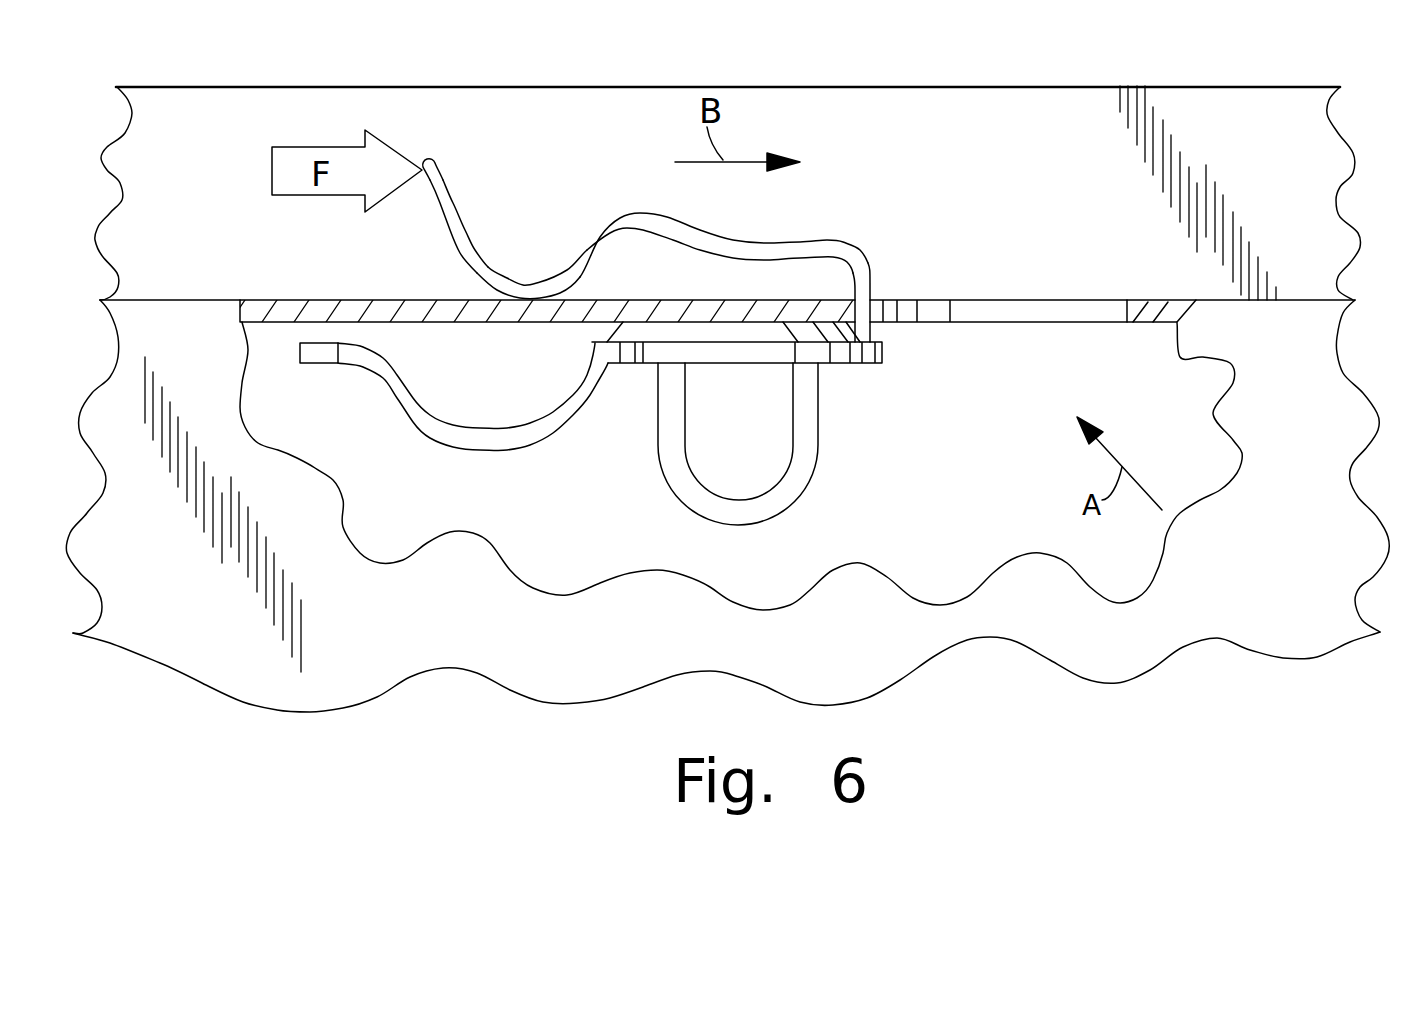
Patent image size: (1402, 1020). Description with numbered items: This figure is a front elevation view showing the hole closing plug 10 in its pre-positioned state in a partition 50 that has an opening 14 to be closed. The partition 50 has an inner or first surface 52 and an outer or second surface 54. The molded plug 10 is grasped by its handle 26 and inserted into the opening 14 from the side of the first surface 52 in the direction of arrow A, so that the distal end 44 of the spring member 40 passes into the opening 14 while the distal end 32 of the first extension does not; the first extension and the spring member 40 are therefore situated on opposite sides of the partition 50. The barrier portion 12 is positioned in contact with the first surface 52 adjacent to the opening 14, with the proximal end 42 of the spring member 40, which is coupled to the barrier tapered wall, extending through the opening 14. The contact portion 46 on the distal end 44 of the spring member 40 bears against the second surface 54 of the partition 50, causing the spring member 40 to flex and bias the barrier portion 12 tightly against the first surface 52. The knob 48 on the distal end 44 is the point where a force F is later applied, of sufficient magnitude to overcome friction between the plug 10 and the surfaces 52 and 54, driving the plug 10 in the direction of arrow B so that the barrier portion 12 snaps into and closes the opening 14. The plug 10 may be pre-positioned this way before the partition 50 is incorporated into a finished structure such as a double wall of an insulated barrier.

The hole closing plug 10 is at (619, 440).
The barrier portion 12 is at (736, 340).
The opening 14 is at (1037, 312).
The handle 26 is at (795, 483).
The distal end of the first extension 32 is at (348, 356).
The spring member 40 is at (832, 241).
The proximal end 42 is at (861, 312).
The distal end 44 is at (457, 210).
The contact portion 46 is at (526, 286).
The knob 48 is at (429, 160).
The partition 50 is at (275, 303).
The first surface 52 is at (1140, 335).
The second surface 54 is at (380, 290).